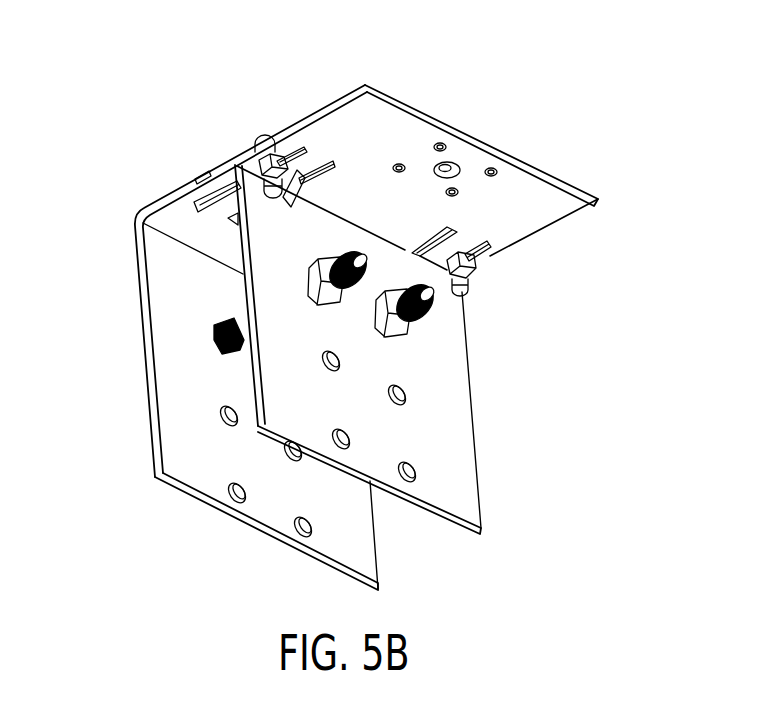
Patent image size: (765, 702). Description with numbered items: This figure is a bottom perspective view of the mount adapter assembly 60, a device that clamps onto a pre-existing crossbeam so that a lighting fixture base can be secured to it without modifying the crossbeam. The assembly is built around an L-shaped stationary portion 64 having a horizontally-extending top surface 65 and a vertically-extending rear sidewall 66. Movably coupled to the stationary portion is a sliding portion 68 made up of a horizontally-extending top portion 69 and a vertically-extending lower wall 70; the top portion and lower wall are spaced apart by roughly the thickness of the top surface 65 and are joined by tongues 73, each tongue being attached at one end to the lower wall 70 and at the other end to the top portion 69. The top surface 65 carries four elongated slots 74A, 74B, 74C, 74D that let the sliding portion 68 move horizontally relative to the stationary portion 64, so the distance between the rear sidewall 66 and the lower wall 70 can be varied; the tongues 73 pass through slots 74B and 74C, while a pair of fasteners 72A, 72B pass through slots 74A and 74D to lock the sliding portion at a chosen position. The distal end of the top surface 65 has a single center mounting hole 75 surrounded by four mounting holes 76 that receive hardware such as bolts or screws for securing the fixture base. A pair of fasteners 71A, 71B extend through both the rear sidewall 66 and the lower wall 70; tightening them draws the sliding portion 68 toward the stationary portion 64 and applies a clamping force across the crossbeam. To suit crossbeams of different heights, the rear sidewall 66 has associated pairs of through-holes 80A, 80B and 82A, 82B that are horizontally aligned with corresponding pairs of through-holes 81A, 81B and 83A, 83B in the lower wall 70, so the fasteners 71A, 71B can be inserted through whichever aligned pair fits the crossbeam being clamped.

The mount adapter assembly 60 is at (340, 295).
The L-shaped stationary portion 64 is at (337, 322).
The horizontally-extending top surface 65 is at (572, 184).
The vertically-extending rear sidewall 66 is at (143, 370).
The sliding portion 68 is at (237, 144).
The horizontally-extending top portion 69 is at (204, 173).
The vertically-extending lower wall 70 is at (463, 485).
The fastener 71A is at (310, 270).
The fastener 71B is at (434, 310).
The fastener 72A is at (260, 193).
The fastener 72B is at (473, 283).
The tongue 73 is at (270, 134).
The elongated slot 74A is at (297, 148).
The elongated slot 74B is at (325, 163).
The elongated slot 74C is at (432, 230).
The elongated slot 74D is at (482, 244).
The center mounting hole 75 is at (452, 168).
The mounting holes 76 is at (437, 145).
The through-hole 80A is at (221, 413).
The through-hole 80B is at (285, 446).
The through-hole 81A is at (327, 373).
The through-hole 81B is at (405, 393).
The through-hole 82A is at (229, 493).
The through-hole 82B is at (296, 530).
The through-hole 83A is at (348, 450).
The through-hole 83B is at (414, 470).